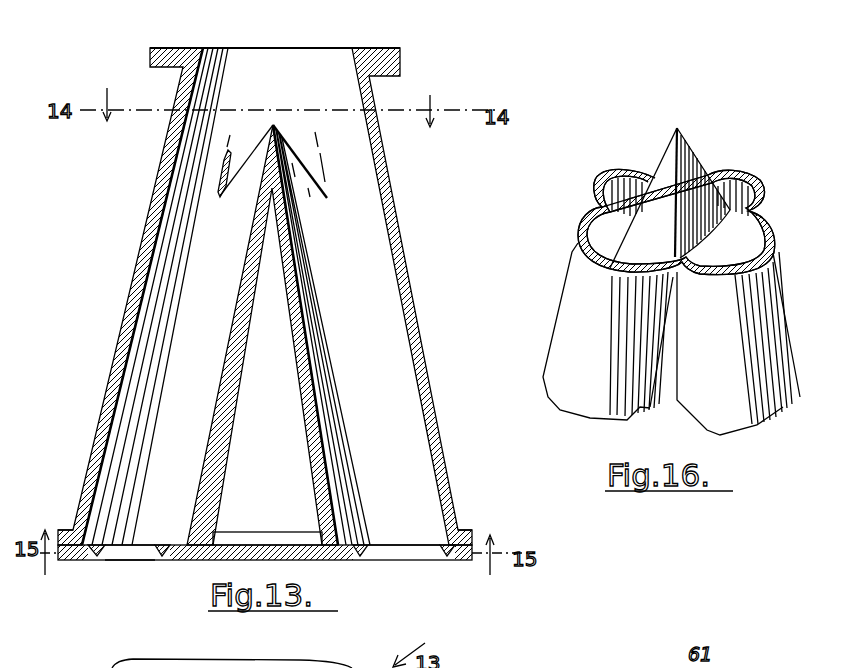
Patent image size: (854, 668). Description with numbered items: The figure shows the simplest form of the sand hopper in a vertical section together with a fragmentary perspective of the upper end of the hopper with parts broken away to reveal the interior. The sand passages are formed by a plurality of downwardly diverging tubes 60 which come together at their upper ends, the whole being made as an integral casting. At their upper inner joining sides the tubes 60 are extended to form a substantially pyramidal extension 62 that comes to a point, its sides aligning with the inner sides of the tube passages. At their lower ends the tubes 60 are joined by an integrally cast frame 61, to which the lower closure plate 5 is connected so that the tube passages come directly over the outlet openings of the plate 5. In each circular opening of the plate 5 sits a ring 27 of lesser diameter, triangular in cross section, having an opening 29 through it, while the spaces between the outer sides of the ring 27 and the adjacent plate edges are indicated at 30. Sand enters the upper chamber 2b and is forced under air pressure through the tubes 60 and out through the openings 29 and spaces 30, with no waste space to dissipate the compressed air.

In FIG. 13, the upper chamber 2b is at (285, 60).
In FIG. 13, the plate 5 is at (213, 562).
In FIG. 13, the ring 27 is at (103, 547).
In FIG. 13, the opening 29 is at (133, 560).
In FIG. 13, the spaces 30 is at (90, 558).
In FIG. 13, the tubes 60 is at (305, 398).
In FIG. 16, the tubes 60 is at (692, 385).
In FIG. 13, the frame 61 is at (266, 538).
In FIG. 13, the pyramidal extension 62 is at (281, 145).
In FIG. 16, the pyramidal extension 62 is at (683, 153).